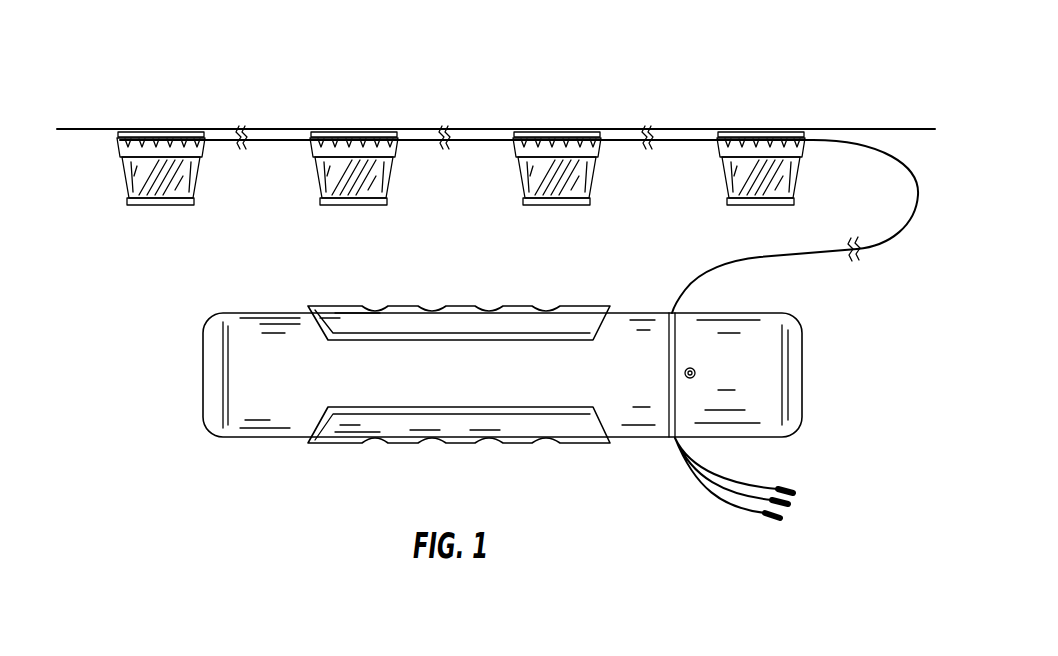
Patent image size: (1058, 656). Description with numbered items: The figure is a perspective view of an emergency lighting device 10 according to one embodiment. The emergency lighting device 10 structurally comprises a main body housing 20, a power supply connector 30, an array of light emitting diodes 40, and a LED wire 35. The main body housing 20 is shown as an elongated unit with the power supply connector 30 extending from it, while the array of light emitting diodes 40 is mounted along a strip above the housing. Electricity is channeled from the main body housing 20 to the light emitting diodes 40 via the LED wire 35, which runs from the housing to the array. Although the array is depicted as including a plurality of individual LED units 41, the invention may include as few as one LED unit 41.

The emergency lighting device 10 is at (822, 58).
The main body housing 20 is at (284, 420).
The power supply connector 30 is at (727, 498).
The LED wire 35 is at (693, 141).
The array of light emitting diodes 40 is at (551, 108).
The LED unit 41 is at (540, 188).